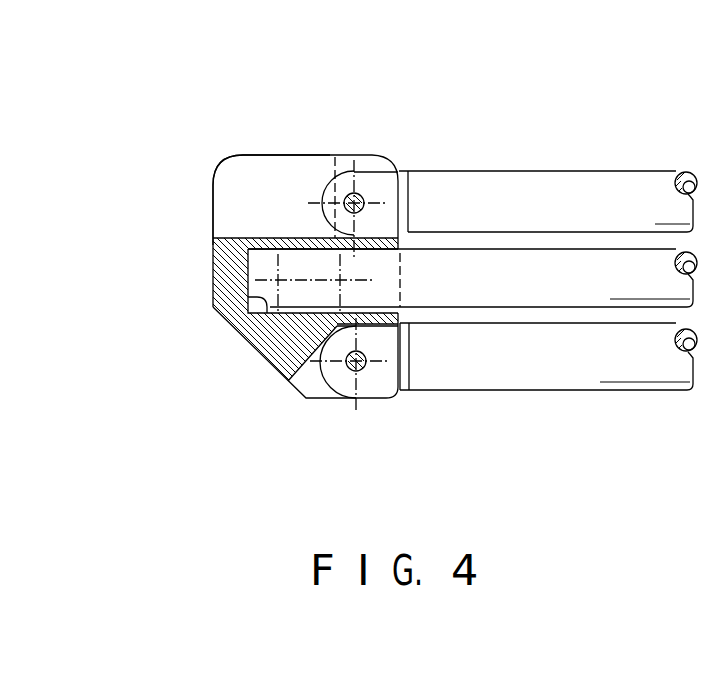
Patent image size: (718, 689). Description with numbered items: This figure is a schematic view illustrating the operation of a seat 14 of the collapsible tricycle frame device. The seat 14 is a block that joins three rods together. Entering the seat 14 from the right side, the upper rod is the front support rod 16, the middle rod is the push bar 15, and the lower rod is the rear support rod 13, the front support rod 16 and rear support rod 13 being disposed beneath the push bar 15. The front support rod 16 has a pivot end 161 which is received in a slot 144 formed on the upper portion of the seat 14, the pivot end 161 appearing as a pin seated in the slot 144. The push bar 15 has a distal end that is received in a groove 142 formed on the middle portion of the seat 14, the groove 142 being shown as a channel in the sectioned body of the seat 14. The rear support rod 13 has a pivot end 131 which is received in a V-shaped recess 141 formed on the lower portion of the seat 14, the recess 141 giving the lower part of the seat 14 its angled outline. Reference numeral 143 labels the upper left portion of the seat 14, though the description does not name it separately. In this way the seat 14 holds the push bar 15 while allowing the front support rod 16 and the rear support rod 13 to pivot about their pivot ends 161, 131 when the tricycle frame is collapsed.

The rear support rod 13 is at (593, 342).
The seat 14 is at (222, 271).
The push bar 15 is at (542, 258).
The front support rod 16 is at (481, 170).
The pivot end of the rear support rod 131 is at (383, 376).
The V-shaped recess 141 is at (322, 388).
The groove 142 is at (266, 318).
The cover 143 is at (263, 164).
The slot 144 is at (377, 163).
The pivot end of the front support rod 161 is at (347, 160).